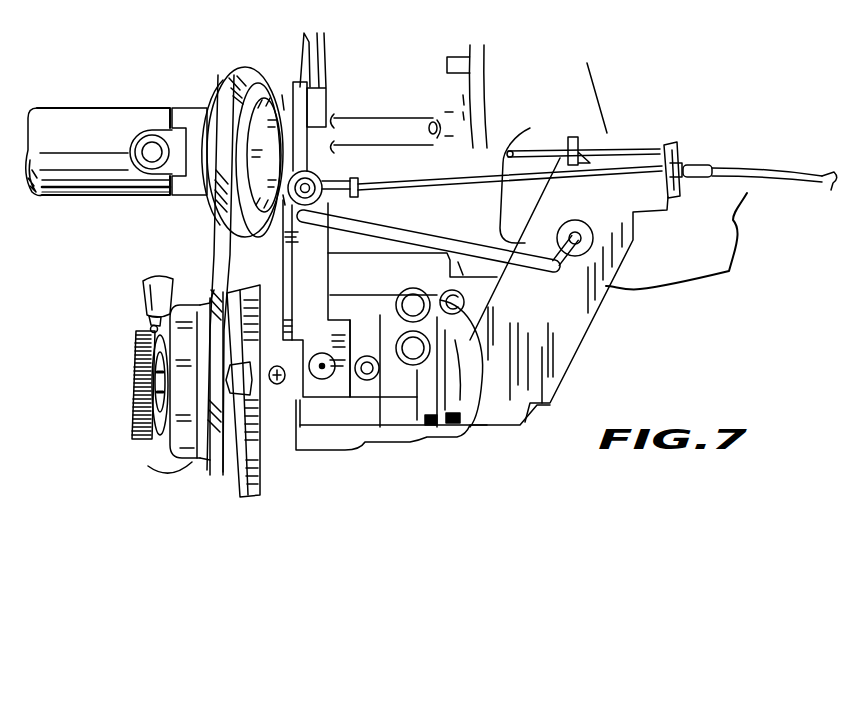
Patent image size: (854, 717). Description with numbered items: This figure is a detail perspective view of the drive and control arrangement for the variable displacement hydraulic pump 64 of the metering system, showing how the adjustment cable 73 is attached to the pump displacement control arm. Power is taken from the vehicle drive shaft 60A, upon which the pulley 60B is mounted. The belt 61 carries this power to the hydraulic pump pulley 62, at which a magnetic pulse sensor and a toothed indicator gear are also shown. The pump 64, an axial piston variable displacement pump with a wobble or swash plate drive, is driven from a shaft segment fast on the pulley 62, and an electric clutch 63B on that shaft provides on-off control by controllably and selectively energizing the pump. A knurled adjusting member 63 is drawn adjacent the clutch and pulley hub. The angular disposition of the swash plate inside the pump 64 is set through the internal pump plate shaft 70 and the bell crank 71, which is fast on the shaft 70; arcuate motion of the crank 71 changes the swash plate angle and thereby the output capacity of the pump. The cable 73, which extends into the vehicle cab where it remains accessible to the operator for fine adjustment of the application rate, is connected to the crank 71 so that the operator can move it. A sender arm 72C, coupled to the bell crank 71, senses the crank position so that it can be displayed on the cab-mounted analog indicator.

The vehicle drive shaft 60A is at (70, 108).
The pulley 60B is at (222, 82).
The belt 61 is at (213, 253).
The hydraulic pump pulley 62 is at (215, 476).
The adjusting knob 63 is at (134, 344).
The electric clutch 63B is at (188, 464).
The hydraulic pump 64 is at (412, 440).
The internal pump plate shaft 70 is at (321, 380).
The bell crank 71 is at (320, 300).
The sender arm 72C is at (488, 259).
The cable 73 is at (509, 151).